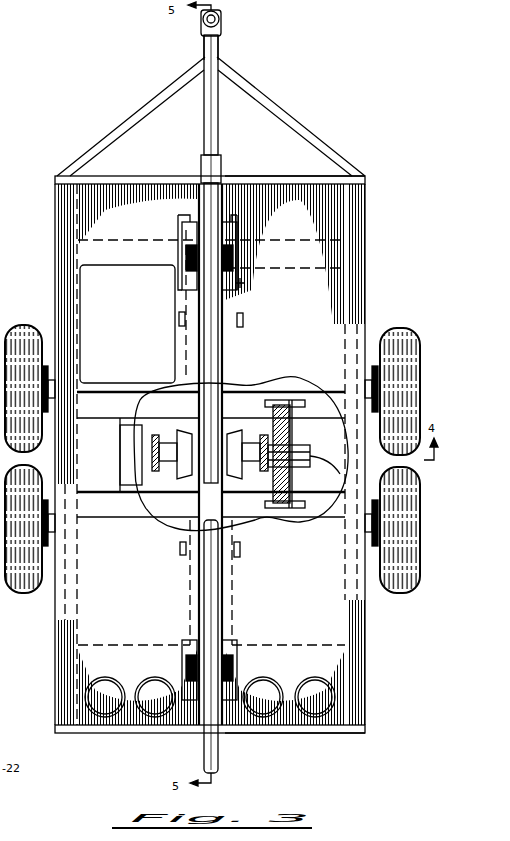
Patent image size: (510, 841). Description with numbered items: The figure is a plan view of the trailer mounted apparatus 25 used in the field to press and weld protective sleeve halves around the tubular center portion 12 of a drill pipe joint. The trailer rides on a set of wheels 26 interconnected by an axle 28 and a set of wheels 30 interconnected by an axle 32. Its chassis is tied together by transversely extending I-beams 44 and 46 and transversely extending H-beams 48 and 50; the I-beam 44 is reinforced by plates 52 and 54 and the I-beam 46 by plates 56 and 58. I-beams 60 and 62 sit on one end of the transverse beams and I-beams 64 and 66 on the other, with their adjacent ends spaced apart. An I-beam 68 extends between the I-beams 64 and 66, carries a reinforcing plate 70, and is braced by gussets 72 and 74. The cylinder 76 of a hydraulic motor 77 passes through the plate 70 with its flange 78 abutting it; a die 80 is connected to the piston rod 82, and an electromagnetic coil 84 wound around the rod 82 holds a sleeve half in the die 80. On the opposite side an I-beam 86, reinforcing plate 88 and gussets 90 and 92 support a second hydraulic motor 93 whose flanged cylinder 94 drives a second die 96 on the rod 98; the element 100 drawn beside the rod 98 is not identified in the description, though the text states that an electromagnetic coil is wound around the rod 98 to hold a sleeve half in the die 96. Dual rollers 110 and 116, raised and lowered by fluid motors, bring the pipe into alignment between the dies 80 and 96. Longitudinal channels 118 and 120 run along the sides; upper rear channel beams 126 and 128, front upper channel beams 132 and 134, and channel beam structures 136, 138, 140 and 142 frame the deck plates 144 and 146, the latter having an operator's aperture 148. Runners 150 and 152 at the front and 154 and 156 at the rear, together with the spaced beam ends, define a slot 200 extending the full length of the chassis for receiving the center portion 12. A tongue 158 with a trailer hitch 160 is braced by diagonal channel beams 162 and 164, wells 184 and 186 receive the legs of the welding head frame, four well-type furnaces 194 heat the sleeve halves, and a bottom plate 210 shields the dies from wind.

The tubular center portion 12 is at (222, 165).
The trailer mounted apparatus 25 is at (50, 280).
The set of wheels 26 is at (36, 326).
The axle 28 is at (365, 382).
The set of wheels 30 is at (405, 561).
The axle 32 is at (55, 550).
The transversely extending I-beam 44 is at (228, 393).
The transversely extending I-beam 46 is at (218, 515).
The transversely extending H-beam 48 is at (320, 240).
The transversely extending H-beam 50 is at (275, 651).
The reinforcing plate 52 is at (160, 393).
The reinforcing plate 54 is at (268, 392).
The reinforcing plate 56 is at (148, 506).
The reinforcing plate 58 is at (281, 523).
The I-beam 60 is at (184, 410).
The I-beam 62 is at (184, 515).
The I-beam 64 is at (246, 413).
The I-beam 66 is at (254, 515).
The I-beam 68 is at (298, 441).
The reinforcing plate 70 is at (286, 400).
The gusset 72 is at (319, 400).
The gusset 74 is at (307, 531).
The cylinder 76 is at (312, 452).
The hydraulic motor 77 is at (318, 462).
The flange 78 is at (264, 440).
The die 80 is at (243, 454).
The piston rod 82 is at (261, 445).
The electromagnetic coil 84 is at (240, 479).
The I-beam 86 is at (135, 441).
The reinforcing plate 88 is at (135, 463).
The reinforcing gusset 90 is at (118, 488).
The reinforcing gusset 92 is at (118, 431).
The second hydraulic motor 93 is at (138, 453).
The flanged cylinder 94 is at (165, 425).
The second die 96 is at (175, 454).
The hydraulic motor rod 98 is at (158, 436).
The hub 100 is at (176, 478).
The dual rollers 110 is at (185, 258).
The dual rollers 116 is at (185, 661).
The longitudinally extending channel 118 is at (358, 652).
The longitudinally extending channel 120 is at (58, 633).
The upper rear channel beam 126 is at (318, 735).
The upper rear channel beam 128 is at (112, 735).
The front upper channel beam 132 is at (310, 198).
The front upper channel beam 134 is at (124, 198).
The channel beam structure 136 is at (235, 606).
The channel beam structure 138 is at (188, 592).
The channel beam structure 140 is at (246, 284).
The channel beam structure 142 is at (190, 207).
The deck plate 144 is at (317, 330).
The deck plate 146 is at (132, 241).
The aperture 148 is at (100, 383).
The front runner 150 is at (318, 176).
The front runner 152 is at (121, 176).
The rear runner 154 is at (266, 733).
The rear runner 156 is at (78, 733).
The tongue 158 is at (218, 58).
The trailer hitch 160 is at (222, 28).
The diagonal channel beam 162 is at (290, 128).
The diagonal channel beam 164 is at (150, 107).
The wells 184 is at (243, 320).
The wells 186 is at (179, 319).
The well-type furnace 194 is at (150, 690).
The slot 200 is at (222, 184).
The bottom plate 210 is at (166, 516).